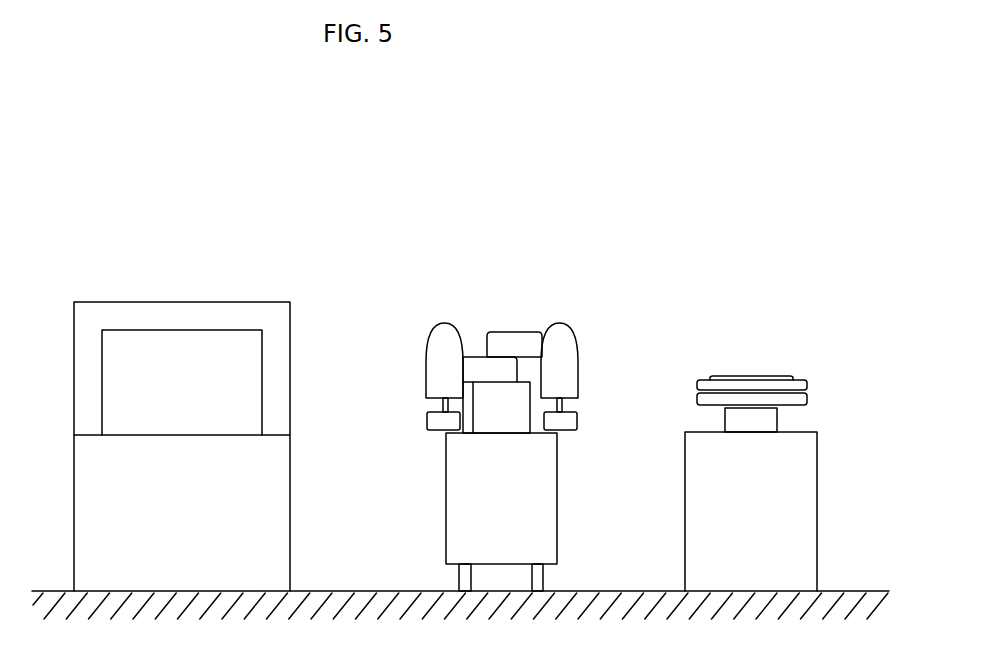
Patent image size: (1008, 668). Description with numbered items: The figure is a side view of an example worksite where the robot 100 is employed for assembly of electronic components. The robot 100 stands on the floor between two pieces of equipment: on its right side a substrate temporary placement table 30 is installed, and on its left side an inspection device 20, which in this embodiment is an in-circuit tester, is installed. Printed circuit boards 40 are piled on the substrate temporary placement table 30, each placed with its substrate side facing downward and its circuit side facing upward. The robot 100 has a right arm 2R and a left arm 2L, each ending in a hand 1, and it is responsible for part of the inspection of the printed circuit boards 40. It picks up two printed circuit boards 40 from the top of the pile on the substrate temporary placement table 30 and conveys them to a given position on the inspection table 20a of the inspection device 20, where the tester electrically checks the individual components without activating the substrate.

The robot 100 is at (502, 373).
The hand 1 is at (427, 419).
The right arm 2R is at (432, 332).
The left arm 2L is at (573, 332).
The inspection device 20 is at (215, 300).
The inspection table 20a is at (173, 433).
The substrate temporary placement table 30 is at (818, 468).
The printed circuit board 40 is at (808, 386).